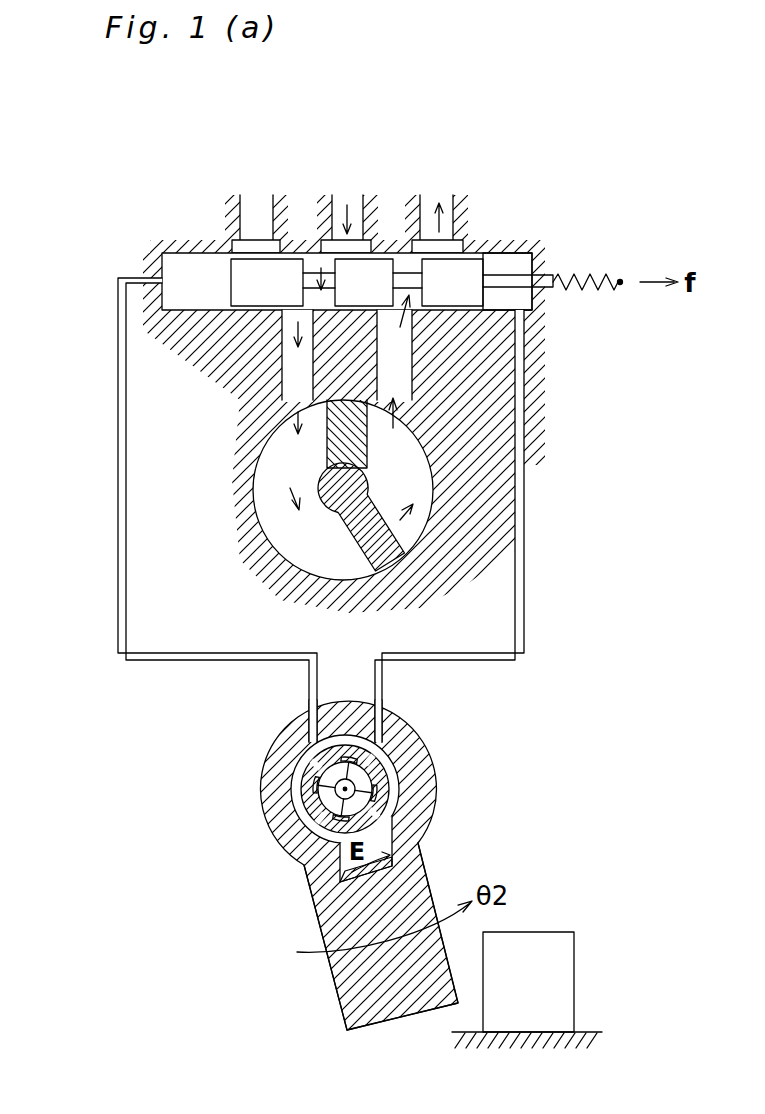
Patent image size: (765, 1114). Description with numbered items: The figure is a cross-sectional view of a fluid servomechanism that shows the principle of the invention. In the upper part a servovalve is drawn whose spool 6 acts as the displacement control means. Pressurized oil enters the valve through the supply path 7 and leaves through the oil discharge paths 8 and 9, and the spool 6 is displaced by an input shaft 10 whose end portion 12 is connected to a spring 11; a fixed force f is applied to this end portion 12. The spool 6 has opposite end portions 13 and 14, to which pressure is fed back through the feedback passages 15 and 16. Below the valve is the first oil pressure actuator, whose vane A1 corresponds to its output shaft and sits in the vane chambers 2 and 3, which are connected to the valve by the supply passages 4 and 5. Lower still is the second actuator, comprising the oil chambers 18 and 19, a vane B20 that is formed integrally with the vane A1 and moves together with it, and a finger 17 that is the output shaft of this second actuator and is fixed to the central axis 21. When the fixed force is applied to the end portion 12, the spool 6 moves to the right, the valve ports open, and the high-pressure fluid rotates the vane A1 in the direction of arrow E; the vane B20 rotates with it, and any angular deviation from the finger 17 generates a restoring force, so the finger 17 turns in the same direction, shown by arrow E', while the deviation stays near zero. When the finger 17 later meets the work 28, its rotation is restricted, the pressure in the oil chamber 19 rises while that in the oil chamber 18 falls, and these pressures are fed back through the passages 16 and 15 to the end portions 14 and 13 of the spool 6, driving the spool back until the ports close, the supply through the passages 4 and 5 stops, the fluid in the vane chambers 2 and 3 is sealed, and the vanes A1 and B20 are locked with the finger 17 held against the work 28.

The vane chamber 2 is at (413, 477).
The vane chamber 3 is at (300, 545).
The supply passage 4 is at (292, 368).
The supply passage 5 is at (400, 360).
The spool 6 is at (462, 275).
The supply path 7 is at (338, 212).
The oil discharge path 8 is at (260, 215).
The oil discharge path 9 is at (428, 208).
The input shaft 10 is at (567, 262).
The spring 11 is at (583, 290).
The end portion of input shaft 12 is at (621, 287).
The end portion of spool 13 is at (513, 265).
The end portion of spool 14 is at (195, 282).
The feedback passage 15 is at (522, 440).
The feedback passage 16 is at (122, 485).
The finger 17 is at (363, 1003).
The oil chamber 18 is at (293, 792).
The oil chamber 19 is at (392, 765).
The central axis 21 is at (325, 815).
The vane B20 is at (375, 830).
The work 28 is at (572, 943).
The vane A1 is at (400, 566).